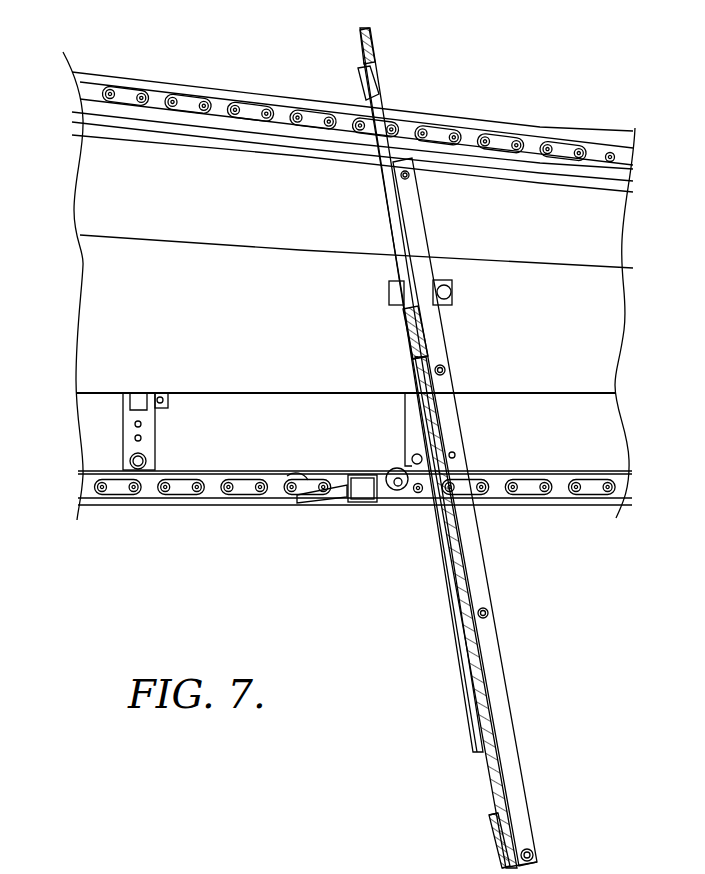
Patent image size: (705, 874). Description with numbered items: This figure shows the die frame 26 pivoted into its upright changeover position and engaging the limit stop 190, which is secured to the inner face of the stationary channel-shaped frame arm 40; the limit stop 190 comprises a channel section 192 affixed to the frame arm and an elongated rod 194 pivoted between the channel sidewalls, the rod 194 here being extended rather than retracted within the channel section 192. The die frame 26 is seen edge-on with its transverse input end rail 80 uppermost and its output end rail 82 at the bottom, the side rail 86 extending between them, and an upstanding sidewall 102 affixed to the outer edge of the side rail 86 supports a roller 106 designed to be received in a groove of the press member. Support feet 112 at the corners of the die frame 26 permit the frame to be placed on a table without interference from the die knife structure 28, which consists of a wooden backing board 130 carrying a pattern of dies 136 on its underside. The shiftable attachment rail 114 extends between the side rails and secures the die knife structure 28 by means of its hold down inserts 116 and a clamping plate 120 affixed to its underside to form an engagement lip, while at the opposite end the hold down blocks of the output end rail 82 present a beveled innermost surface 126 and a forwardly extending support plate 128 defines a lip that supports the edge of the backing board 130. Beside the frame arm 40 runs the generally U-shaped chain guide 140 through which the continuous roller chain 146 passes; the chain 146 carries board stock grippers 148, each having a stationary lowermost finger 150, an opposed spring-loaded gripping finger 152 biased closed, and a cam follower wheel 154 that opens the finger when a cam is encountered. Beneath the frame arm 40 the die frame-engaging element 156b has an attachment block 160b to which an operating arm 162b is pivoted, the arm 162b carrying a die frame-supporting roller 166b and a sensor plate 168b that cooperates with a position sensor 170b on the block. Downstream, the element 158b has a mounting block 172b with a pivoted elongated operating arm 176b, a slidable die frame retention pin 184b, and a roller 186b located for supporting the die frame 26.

The die frame 26 is at (451, 448).
The die knife structure 28 is at (445, 448).
The frame arm 40 is at (180, 250).
The input end rail 80 is at (372, 34).
The output end rail 82 is at (540, 850).
The side rail 86 is at (380, 212).
The sidewall 102 is at (493, 513).
The roller 106 is at (492, 613).
The support foot 112 is at (363, 78).
The attachment rail 114 is at (428, 318).
The hold down insert 116 is at (428, 346).
The clamping plate 120 is at (408, 338).
The beveled innermost surface 126 is at (526, 846).
The support plate 128 is at (486, 857).
The backing board 130 is at (506, 612).
The dies 136 is at (401, 448).
The chain guide 140 is at (366, 306).
The roller chain 146 is at (310, 118).
The board stock gripper 148 is at (362, 505).
The lowermost finger 150 is at (335, 498).
The gripping finger 152 is at (290, 475).
The cam follower wheel 154 is at (410, 495).
The die frame-engaging element 156b is at (127, 446).
The die frame-engaging element 158b is at (430, 400).
The attachment block 160b is at (136, 393).
The operating arm 162b is at (100, 476).
The die frame-supporting roller 166b is at (148, 462).
The sensor plate 168b is at (162, 393).
The position sensor 170b is at (166, 407).
The mounting block 172b is at (420, 356).
The operating arm 176b is at (418, 394).
The die frame retention pin 184b is at (455, 455).
The roller 186b is at (413, 461).
The limit stop 190 is at (434, 269).
The channel section 192 is at (391, 283).
The rod 194 is at (455, 295).